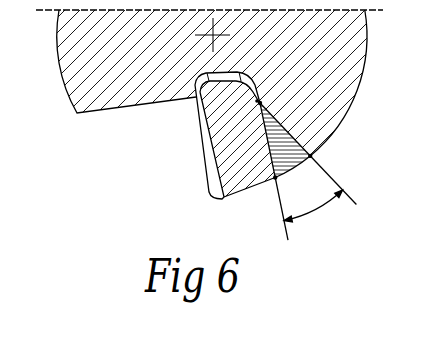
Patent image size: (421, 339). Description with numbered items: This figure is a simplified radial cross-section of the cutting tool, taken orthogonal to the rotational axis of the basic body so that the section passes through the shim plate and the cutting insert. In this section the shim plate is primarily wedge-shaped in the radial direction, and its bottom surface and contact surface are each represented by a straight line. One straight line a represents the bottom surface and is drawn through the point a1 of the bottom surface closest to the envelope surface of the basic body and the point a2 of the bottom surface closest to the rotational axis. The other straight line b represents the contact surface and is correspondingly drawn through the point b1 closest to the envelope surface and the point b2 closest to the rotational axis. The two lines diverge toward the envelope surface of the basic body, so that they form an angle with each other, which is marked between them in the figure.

The straight line a is at (313, 161).
The straight line b is at (279, 183).
The point of the bottom surface a1 is at (310, 156).
The point of the bottom surface a2 is at (260, 102).
The point of the contact surface b1 is at (275, 178).
The point of the contact surface b2 is at (257, 101).